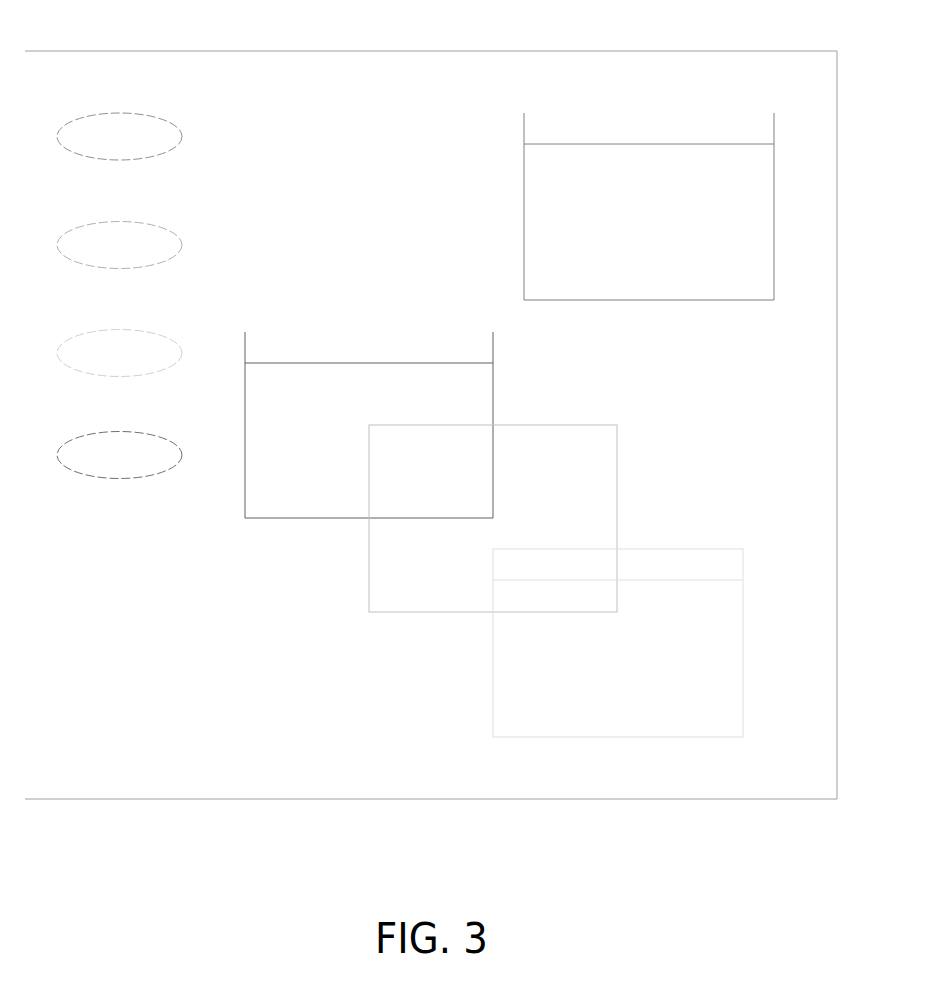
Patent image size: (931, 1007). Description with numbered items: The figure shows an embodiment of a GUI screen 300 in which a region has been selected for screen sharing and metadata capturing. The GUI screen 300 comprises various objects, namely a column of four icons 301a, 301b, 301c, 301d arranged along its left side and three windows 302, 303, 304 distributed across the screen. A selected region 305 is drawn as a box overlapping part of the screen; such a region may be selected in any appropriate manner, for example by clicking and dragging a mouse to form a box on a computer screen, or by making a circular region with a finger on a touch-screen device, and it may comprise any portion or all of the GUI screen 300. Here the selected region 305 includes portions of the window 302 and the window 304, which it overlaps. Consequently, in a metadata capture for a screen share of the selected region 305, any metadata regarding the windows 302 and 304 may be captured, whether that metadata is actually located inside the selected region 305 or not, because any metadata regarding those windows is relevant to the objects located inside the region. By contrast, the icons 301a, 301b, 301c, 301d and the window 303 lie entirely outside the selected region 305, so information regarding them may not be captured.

The GUI screen 300 is at (99, 28).
The icon 301a is at (140, 145).
The icon 301b is at (140, 254).
The icon 301c is at (140, 362).
The icon 301d is at (140, 464).
The window 302 is at (282, 356).
The window 303 is at (561, 138).
The window 304 is at (529, 575).
The selected region 305 is at (567, 483).